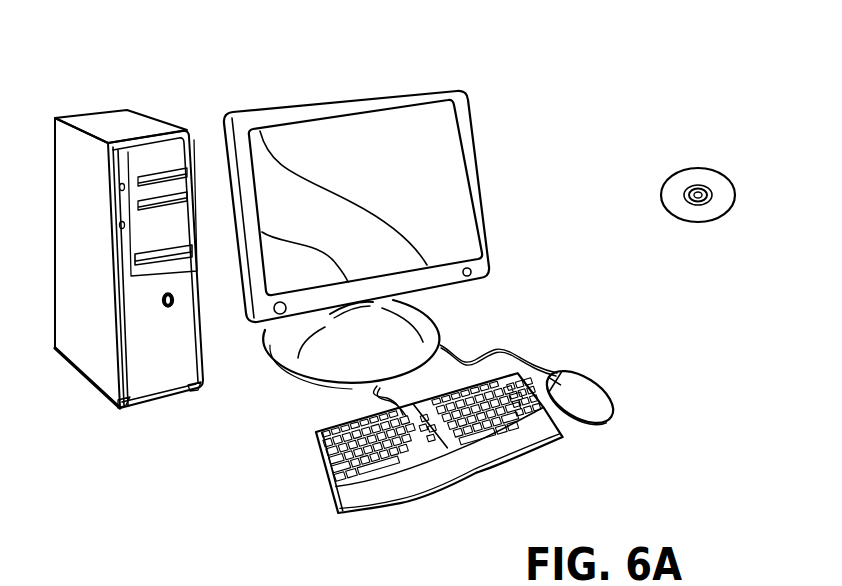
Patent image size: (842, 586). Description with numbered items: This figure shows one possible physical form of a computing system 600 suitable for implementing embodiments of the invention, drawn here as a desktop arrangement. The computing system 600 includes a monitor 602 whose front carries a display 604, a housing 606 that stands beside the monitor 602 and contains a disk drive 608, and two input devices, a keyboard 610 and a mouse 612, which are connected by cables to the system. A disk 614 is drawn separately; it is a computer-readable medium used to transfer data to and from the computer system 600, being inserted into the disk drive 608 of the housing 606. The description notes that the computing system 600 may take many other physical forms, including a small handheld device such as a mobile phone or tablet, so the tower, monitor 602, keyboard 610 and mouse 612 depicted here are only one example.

The computing system 600 is at (647, 61).
The monitor 602 is at (487, 206).
The display 604 is at (435, 133).
The housing 606 is at (116, 125).
The disk drive 608 is at (180, 252).
The keyboard 610 is at (320, 478).
The mouse 612 is at (603, 382).
The disk 614 is at (719, 169).